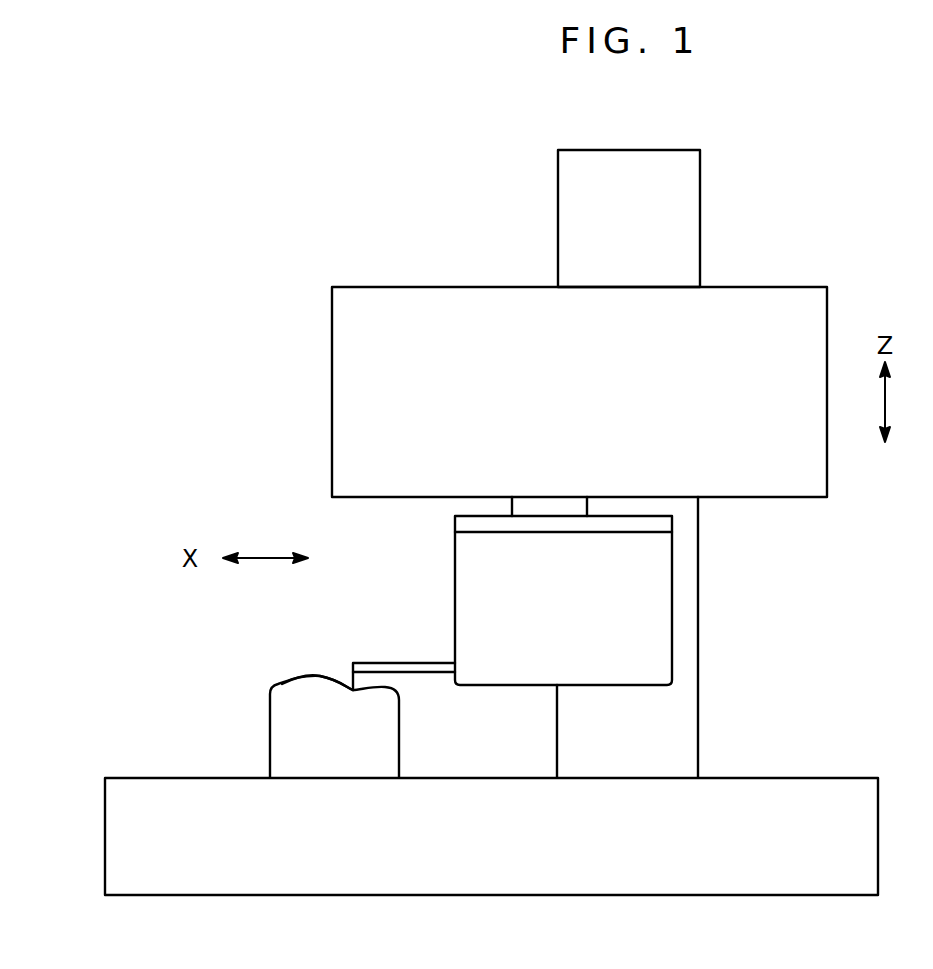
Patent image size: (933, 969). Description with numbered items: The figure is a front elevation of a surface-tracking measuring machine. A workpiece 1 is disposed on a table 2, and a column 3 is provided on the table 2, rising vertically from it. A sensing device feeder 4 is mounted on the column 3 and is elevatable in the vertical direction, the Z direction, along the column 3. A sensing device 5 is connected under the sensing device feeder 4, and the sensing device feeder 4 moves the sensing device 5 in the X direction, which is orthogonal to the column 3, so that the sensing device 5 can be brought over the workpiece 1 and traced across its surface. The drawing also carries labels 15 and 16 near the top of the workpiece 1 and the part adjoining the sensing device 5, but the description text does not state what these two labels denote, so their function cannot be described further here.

The workpiece 1 is at (282, 705).
The table 2 is at (118, 822).
The column 3 is at (685, 185).
The sensing device feeder 4 is at (419, 299).
The sensing device 5 is at (473, 563).
The upper surface of workpiece 15 is at (352, 676).
The plate 16 is at (390, 662).